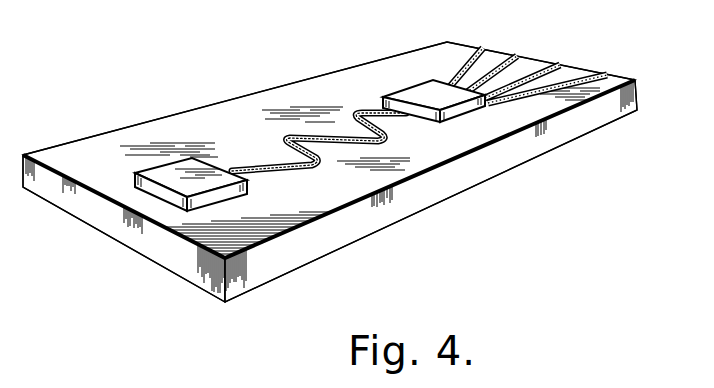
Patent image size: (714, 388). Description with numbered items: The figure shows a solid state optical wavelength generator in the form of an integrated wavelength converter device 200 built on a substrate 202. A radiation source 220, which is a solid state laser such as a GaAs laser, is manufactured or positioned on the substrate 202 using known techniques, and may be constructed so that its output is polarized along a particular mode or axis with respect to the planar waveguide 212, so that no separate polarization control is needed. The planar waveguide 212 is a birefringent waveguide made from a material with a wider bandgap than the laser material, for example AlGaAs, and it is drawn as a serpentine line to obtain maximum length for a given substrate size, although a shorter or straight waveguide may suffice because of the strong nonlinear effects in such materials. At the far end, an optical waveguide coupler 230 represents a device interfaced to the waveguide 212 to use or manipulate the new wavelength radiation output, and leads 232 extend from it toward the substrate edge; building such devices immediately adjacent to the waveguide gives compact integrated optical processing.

The integrated wavelength converter device 200 is at (330, 165).
The substrate 202 is at (163, 253).
The planar waveguide 212 is at (315, 168).
The radiation source 220 is at (133, 173).
The optical waveguide coupler 230 is at (412, 92).
The conductive leads 232 is at (600, 74).